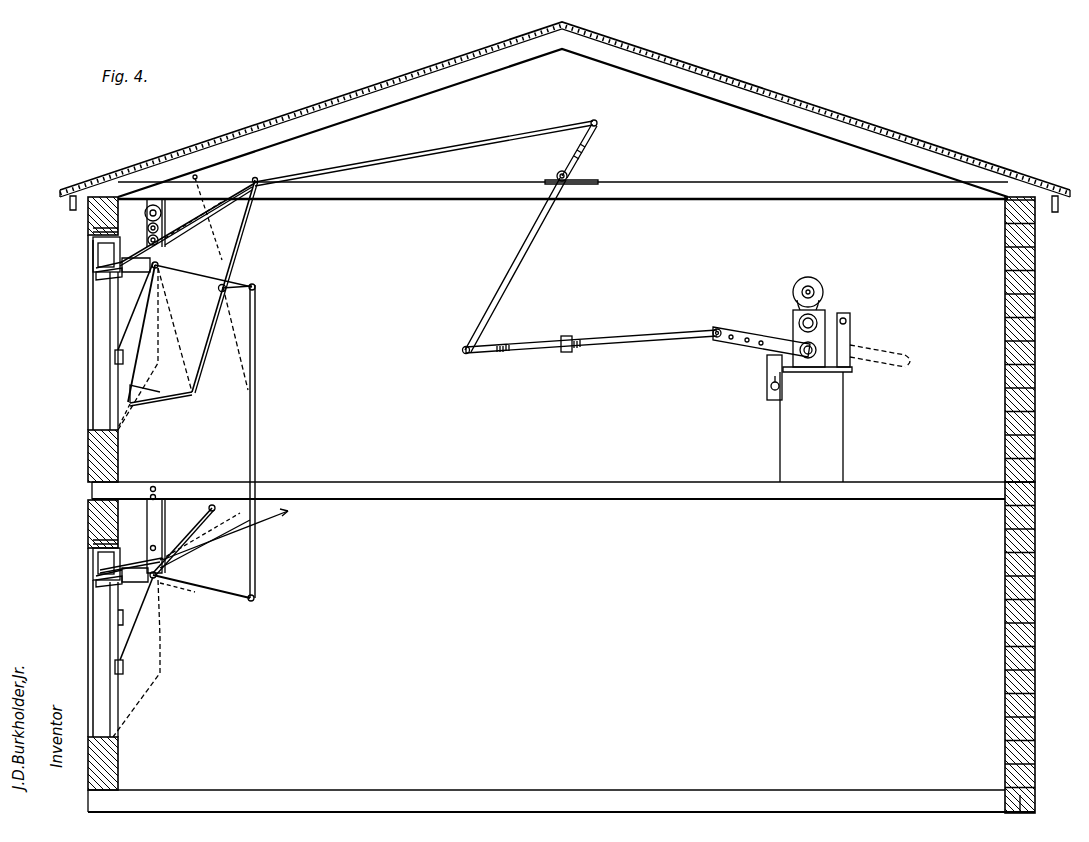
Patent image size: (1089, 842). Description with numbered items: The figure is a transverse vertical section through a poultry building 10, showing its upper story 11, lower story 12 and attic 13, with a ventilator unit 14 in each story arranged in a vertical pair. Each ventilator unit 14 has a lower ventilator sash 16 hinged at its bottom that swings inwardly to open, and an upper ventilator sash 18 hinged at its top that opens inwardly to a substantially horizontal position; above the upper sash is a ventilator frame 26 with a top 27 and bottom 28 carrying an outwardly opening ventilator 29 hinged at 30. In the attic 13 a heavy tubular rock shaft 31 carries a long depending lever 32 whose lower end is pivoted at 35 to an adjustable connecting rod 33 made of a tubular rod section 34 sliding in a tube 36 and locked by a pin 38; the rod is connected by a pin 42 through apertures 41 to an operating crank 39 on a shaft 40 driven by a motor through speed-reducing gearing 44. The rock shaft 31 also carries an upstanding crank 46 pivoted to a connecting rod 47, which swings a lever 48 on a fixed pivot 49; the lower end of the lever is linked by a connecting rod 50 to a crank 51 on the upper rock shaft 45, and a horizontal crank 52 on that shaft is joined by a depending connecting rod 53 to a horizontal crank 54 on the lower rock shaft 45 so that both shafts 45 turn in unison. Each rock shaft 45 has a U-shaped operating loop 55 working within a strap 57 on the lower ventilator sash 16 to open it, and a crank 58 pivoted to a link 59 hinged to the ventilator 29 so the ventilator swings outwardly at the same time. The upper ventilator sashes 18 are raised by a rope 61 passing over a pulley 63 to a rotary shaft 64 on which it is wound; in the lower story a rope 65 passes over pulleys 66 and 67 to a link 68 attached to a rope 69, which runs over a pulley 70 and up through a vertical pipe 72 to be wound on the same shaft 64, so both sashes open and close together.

The poultry building 10 is at (958, 152).
The upper story 11 is at (988, 330).
The lower story 12 is at (992, 666).
The attic 13 is at (730, 170).
The ventilator unit 14 is at (88, 422).
The lower ventilator sash 16 is at (118, 420).
The upper ventilator sash 18 is at (110, 303).
The ventilator frame 26 is at (98, 252).
The top 27 is at (95, 228).
The bottom 28 is at (96, 277).
The ventilator 29 is at (96, 266).
The hinge 30 is at (93, 241).
The rock shaft 31 is at (570, 172).
The depending lever 32 is at (500, 288).
The connecting rod 33 is at (508, 358).
The tubular rod section 34 is at (519, 344).
The pivot 35 is at (462, 352).
The tube 36 is at (658, 344).
The pin 38 is at (570, 336).
The operating crank 39 is at (770, 357).
The shaft 40 is at (816, 346).
The apertures 41 is at (720, 342).
The pin 42 is at (718, 329).
The speed-reducing gearing 44 is at (822, 306).
The rock shaft 45 is at (198, 230).
The upstanding crank 46 is at (584, 150).
The connecting rod 47 is at (447, 147).
The lever 48 is at (246, 240).
The fixed pivot 49 is at (218, 289).
The connecting rod 50 is at (176, 396).
The crank 51 is at (135, 378).
The horizontal crank 52 is at (244, 286).
The depending connecting rod 53 is at (256, 448).
The horizontal crank 54 is at (222, 590).
The U-shaped operating loop 55 is at (118, 337).
The strap 57 is at (114, 356).
The crank 58 is at (225, 213).
The link 59 is at (140, 419).
The rope 61 is at (170, 208).
The pulley 63 is at (215, 205).
The rotary shaft 64 is at (162, 226).
The rope 65 is at (124, 617).
The pulley 66 is at (209, 508).
The pulley 67 is at (237, 533).
The link 68 is at (214, 510).
The rope 69 is at (182, 545).
The pulley 70 is at (122, 548).
The vertical pipe 72 is at (70, 203).